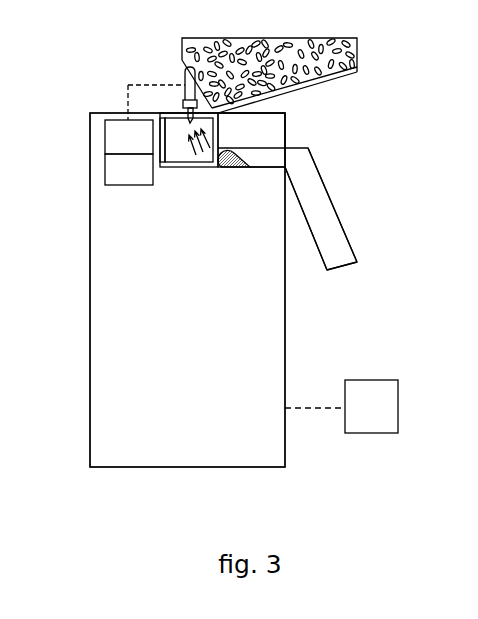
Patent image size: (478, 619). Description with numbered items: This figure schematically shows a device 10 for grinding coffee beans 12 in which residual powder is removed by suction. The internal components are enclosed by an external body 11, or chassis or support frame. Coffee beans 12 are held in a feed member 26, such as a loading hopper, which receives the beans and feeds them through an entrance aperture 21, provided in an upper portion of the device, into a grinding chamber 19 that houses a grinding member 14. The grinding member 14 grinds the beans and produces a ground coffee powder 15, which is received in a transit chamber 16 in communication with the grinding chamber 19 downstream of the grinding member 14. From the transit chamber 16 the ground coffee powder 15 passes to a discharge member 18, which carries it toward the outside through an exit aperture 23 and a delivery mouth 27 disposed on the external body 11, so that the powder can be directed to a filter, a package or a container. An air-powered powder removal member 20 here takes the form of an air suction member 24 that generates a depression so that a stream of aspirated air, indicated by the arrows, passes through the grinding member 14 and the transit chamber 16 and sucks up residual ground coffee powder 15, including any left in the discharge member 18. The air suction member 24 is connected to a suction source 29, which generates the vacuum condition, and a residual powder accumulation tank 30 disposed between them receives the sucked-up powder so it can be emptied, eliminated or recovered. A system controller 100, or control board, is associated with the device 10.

The device for grinding coffee beans 10 is at (360, 158).
The external body 11 is at (110, 302).
The coffee beans 12 is at (313, 50).
The grinding member 14 is at (205, 127).
The ground coffee powder 15 is at (229, 158).
The transit chamber 16 is at (273, 167).
The discharge member 18 is at (340, 216).
The grinding chamber 19 is at (173, 167).
The air-powered powder removal member 20 is at (165, 70).
The entrance aperture 21 is at (159, 122).
The exit aperture 23 is at (338, 270).
The air suction member 24 is at (189, 93).
The feed member 26 is at (330, 76).
The delivery mouth 27 is at (337, 250).
The suction source 29 is at (127, 172).
The residual powder accumulation tank 30 is at (125, 140).
The system controller 100 is at (373, 405).